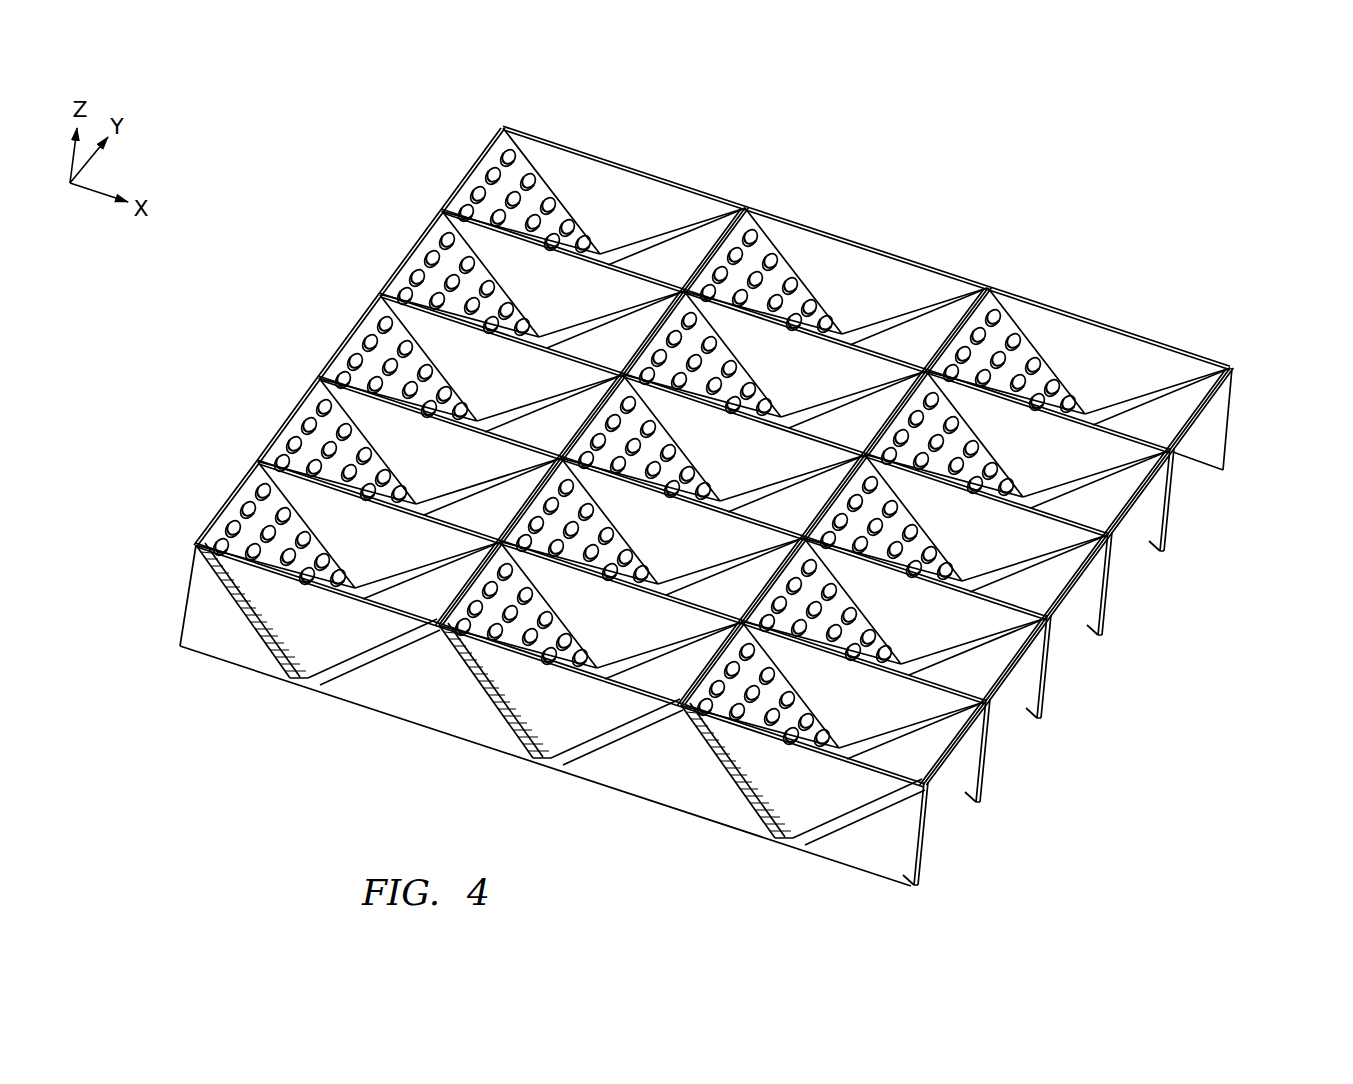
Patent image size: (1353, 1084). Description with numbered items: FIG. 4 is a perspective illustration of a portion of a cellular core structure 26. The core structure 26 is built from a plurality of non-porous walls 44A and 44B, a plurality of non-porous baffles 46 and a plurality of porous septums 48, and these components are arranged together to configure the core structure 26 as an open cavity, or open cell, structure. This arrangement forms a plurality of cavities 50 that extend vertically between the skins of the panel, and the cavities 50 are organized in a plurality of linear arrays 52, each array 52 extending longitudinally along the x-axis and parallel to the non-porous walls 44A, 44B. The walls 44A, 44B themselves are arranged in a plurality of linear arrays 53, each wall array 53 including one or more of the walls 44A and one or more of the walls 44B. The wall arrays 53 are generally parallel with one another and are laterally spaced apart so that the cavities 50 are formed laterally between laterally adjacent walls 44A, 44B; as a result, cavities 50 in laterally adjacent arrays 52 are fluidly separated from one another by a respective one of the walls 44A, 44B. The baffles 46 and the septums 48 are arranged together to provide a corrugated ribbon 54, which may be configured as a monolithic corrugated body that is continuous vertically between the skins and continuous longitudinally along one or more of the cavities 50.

The core structure 26 is at (1096, 190).
The non-porous wall 44A is at (548, 757).
The non-porous wall 44B is at (655, 787).
The non-porous baffle 46 is at (1183, 398).
The porous septum 48 is at (742, 795).
The cavity 50 is at (605, 195).
The linear array 52 is at (435, 152).
The linear array 53 is at (1172, 488).
The corrugated ribbon 54 is at (212, 523).